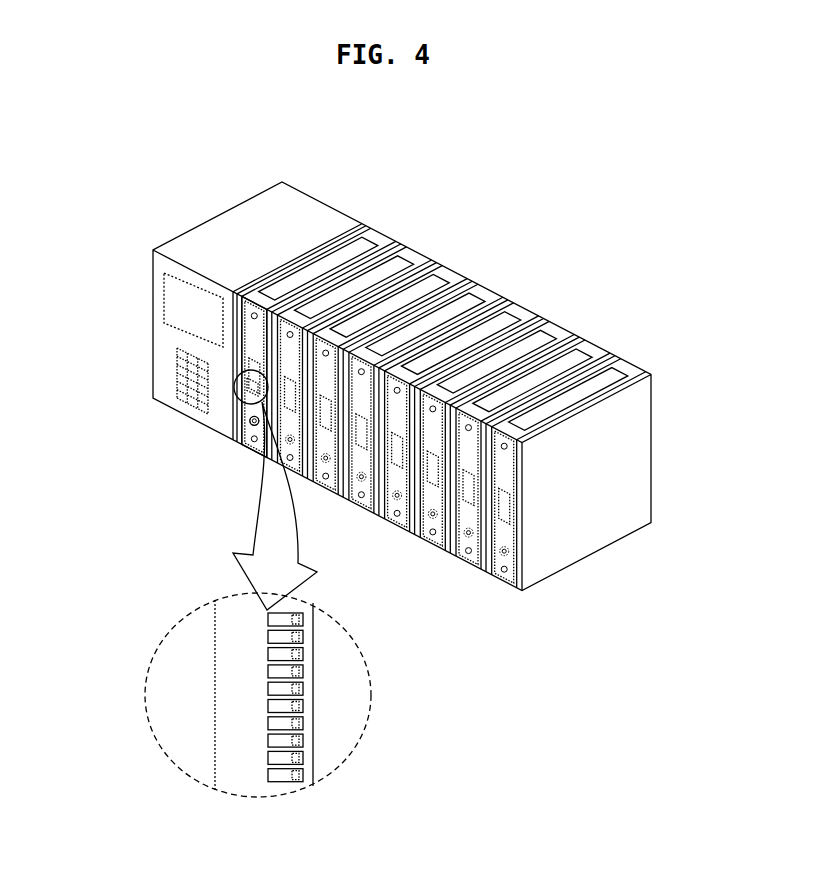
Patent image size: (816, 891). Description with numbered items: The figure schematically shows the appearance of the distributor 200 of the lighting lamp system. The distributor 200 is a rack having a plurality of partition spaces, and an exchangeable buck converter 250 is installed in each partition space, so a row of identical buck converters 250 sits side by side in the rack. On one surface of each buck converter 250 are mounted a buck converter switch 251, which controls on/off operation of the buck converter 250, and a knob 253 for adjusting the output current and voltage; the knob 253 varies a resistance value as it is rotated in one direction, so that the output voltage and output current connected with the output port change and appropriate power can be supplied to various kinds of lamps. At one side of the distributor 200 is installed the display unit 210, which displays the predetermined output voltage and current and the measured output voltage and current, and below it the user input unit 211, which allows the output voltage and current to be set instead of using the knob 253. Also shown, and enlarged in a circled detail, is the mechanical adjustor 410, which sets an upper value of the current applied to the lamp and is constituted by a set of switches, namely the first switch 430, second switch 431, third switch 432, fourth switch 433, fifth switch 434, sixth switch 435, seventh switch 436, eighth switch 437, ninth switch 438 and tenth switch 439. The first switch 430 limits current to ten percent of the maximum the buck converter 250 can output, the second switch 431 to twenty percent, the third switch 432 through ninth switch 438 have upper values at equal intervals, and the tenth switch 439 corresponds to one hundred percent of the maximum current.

The distributor 200 is at (360, 133).
The display unit 210 is at (180, 303).
The user input unit 211 is at (180, 375).
The buck converter 250 is at (371, 241).
The buck converter switch 251 is at (253, 343).
The knob 253 is at (253, 407).
The mechanical adjustor 410 is at (236, 396).
The first switch 430 is at (303, 620).
The second switch 431 is at (303, 637).
The third switch 432 is at (303, 654).
The fourth switch 433 is at (303, 671).
The fifth switch 434 is at (303, 689).
The sixth switch 435 is at (303, 706).
The seventh switch 436 is at (303, 723).
The eighth switch 437 is at (303, 741).
The ninth switch 438 is at (303, 758).
The tenth switch 439 is at (303, 775).